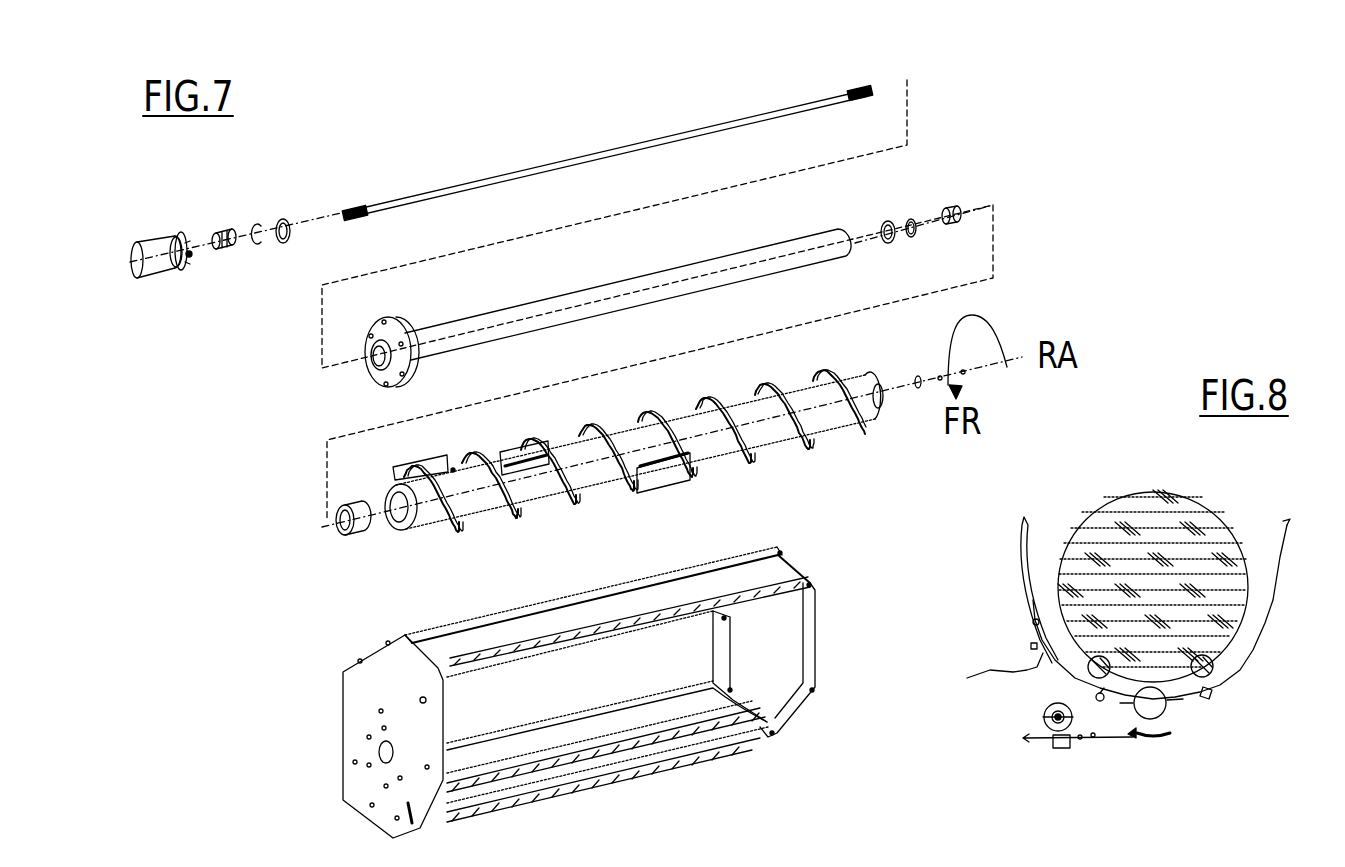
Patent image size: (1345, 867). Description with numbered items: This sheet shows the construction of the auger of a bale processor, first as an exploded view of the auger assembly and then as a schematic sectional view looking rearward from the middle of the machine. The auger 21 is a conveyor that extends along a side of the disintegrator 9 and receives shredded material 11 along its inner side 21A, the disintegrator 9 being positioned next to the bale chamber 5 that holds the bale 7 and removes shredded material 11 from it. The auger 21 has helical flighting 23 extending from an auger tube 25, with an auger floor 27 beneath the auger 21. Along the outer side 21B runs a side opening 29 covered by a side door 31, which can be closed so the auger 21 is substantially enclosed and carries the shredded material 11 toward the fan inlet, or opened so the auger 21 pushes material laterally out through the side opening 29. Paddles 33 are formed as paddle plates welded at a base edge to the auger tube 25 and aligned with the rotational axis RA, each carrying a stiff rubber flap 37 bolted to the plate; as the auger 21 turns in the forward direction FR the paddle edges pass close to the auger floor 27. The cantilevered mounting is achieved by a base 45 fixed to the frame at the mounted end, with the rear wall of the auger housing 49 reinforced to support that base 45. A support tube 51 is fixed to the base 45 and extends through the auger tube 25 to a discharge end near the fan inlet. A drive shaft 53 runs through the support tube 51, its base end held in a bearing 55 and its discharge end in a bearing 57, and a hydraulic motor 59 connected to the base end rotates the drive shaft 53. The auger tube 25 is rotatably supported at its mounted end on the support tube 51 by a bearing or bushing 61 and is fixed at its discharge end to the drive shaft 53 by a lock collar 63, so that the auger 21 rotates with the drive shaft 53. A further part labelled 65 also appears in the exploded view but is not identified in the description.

In FIG. 8, the bale chamber 5 is at (1161, 574).
In FIG. 8, the bale 7 is at (1153, 547).
In FIG. 8, the disintegrator 9 is at (1191, 720).
In FIG. 8, the shredded material 11 is at (1222, 760).
In FIG. 7, the auger 21 is at (743, 300).
In FIG. 8, the auger 21 is at (1128, 759).
In FIG. 8, the inner side 21A is at (1183, 765).
In FIG. 8, the outer side 21B is at (1027, 773).
In FIG. 7, the helical flighting 23 is at (661, 425).
In FIG. 7, the auger tube 25 is at (634, 451).
In FIG. 7, the auger floor 27 is at (610, 684).
In FIG. 8, the auger floor 27 is at (1016, 763).
In FIG. 8, the side opening 29 is at (981, 701).
In FIG. 8, the side door 31 is at (1001, 598).
In FIG. 7, the paddles 33 is at (543, 430).
In FIG. 7, the stiff rubber flap 37 is at (447, 444).
In FIG. 7, the base 45 is at (418, 331).
In FIG. 7, the auger housing 49 is at (350, 736).
In FIG. 7, the support tube 51 is at (628, 280).
In FIG. 7, the drive shaft 53 is at (607, 150).
In FIG. 7, the bearing 55 is at (263, 196).
In FIG. 7, the bearing 57 is at (912, 198).
In FIG. 7, the hydraulic motor 59 is at (147, 298).
In FIG. 7, the bearing or bushing 61 is at (380, 547).
In FIG. 7, the lock collar 63 is at (982, 172).
In FIG. 7, the plate 65 is at (613, 503).